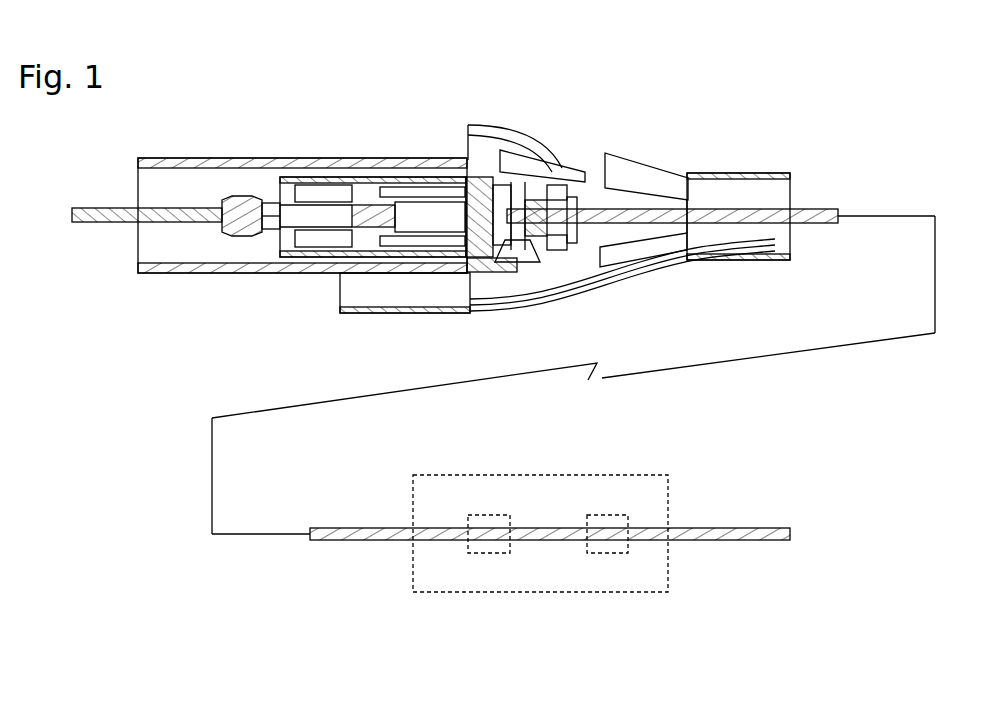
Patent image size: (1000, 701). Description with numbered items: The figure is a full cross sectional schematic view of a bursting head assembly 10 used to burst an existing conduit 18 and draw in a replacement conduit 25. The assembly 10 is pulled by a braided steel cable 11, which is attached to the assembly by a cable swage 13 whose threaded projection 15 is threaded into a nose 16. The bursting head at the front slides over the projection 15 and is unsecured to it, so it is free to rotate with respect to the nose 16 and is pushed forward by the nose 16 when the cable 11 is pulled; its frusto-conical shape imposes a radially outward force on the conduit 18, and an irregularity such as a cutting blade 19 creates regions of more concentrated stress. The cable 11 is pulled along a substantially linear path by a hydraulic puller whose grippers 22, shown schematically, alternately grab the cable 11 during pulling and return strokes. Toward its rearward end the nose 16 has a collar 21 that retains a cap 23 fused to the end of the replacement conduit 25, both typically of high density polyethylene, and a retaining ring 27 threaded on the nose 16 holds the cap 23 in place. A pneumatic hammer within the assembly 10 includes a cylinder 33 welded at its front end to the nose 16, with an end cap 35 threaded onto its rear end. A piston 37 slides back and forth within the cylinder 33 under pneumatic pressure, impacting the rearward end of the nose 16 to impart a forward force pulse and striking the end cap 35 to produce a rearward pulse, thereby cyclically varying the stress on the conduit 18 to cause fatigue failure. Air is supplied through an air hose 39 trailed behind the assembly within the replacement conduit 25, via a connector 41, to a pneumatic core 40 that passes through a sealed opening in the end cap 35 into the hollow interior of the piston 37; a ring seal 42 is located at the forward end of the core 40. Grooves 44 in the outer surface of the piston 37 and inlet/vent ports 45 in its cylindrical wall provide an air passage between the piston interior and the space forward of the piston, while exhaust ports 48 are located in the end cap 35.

The bursting head assembly 10 is at (750, 261).
The cable 11 is at (573, 410).
The cable swage 13 is at (768, 180).
The threaded projection 15 is at (622, 278).
The nose 16 is at (622, 286).
The conduit 18 is at (755, 274).
The cutting blade 19 is at (711, 170).
The collar 21 is at (569, 299).
The grippers 22 is at (610, 515).
The cap 23 is at (554, 156).
The replacement conduit 25 is at (344, 170).
The retaining ring 27 is at (575, 169).
The cylinder 33 is at (378, 312).
The end cap 35 is at (273, 175).
The piston 37 is at (497, 110).
The air hose 39 is at (281, 227).
The pneumatic nozzle (core) 40 is at (371, 264).
The connector 41 is at (176, 181).
The ring seal 42 is at (330, 145).
The grooves 44 is at (405, 307).
The inlet/vent ports 45 is at (387, 147).
The exhaust ports 48 is at (352, 250).